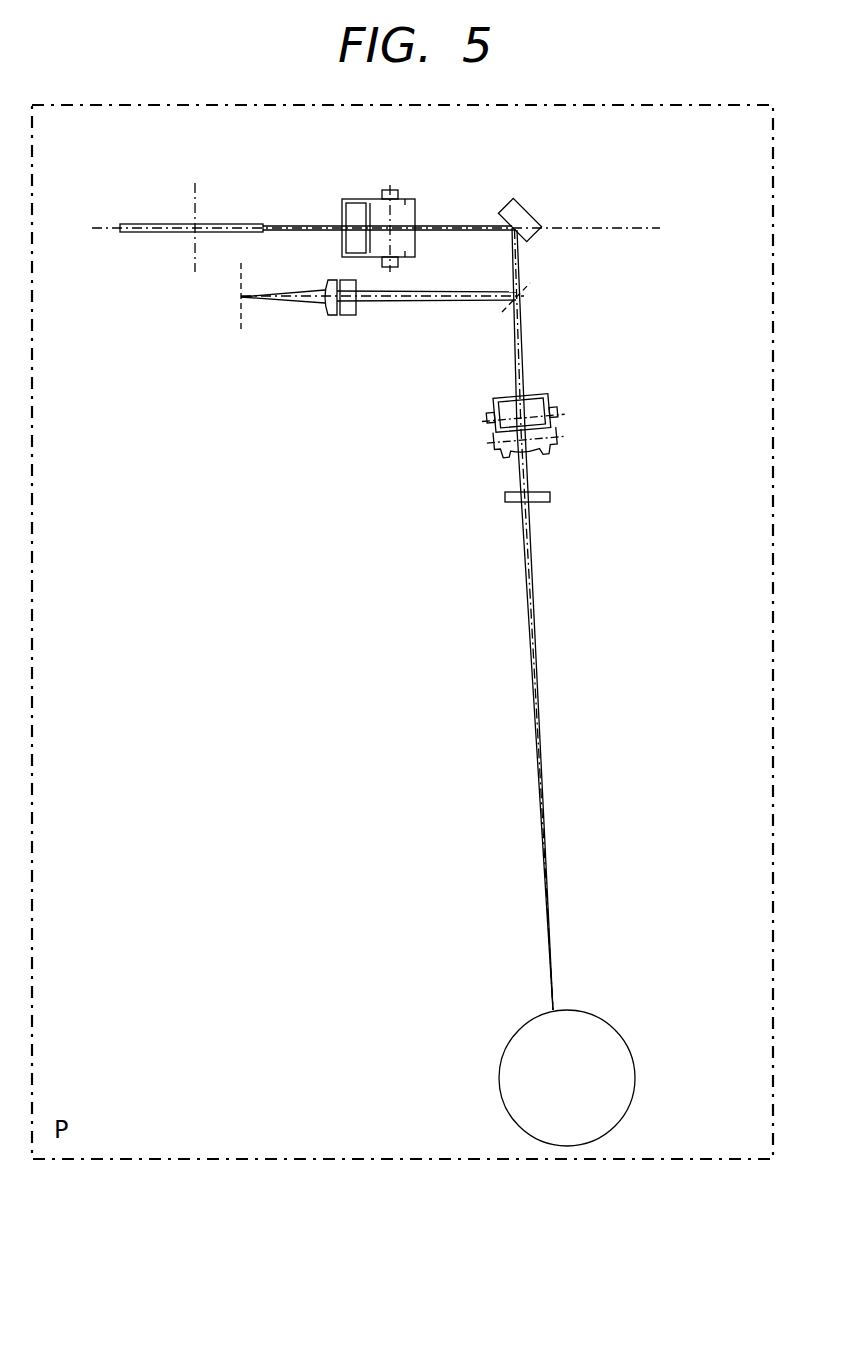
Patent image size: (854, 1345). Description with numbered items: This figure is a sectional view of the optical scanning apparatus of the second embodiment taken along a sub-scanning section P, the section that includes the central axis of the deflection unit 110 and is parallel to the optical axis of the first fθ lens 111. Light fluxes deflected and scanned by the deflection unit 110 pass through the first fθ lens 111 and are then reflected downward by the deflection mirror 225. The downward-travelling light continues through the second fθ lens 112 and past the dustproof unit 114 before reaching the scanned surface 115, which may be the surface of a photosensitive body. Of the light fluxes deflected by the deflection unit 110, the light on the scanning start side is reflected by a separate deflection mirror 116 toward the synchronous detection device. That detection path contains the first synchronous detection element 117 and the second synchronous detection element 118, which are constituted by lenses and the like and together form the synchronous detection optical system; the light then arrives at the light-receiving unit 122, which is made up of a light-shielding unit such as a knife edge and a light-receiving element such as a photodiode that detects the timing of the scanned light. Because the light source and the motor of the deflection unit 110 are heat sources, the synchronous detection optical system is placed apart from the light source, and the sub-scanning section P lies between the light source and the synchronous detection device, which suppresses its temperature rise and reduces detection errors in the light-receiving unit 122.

The deflection unit 110 is at (155, 223).
The first fθ lens 111 is at (405, 203).
The deflection mirror 225 is at (525, 212).
The deflection mirror 116 is at (533, 292).
The light-receiving unit 122 is at (240, 313).
The second synchronous detection element 118 is at (330, 314).
The first synchronous detection element 117 is at (350, 315).
The second fθ lens 112 is at (540, 396).
The dustproof unit 114 is at (552, 497).
The scanned surface 115 is at (631, 1050).